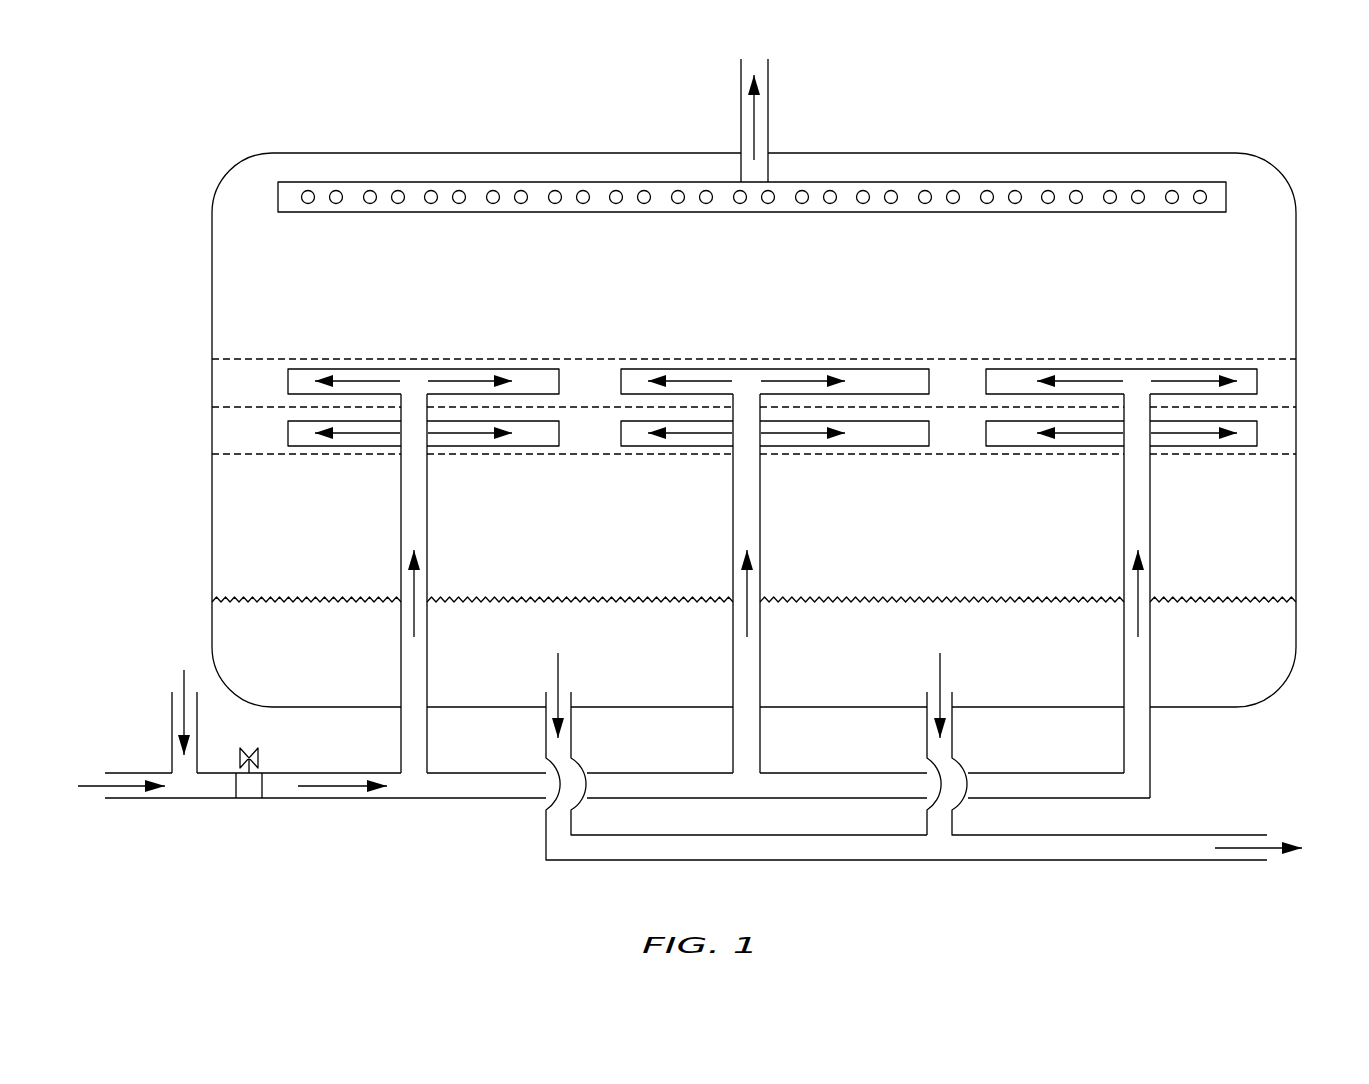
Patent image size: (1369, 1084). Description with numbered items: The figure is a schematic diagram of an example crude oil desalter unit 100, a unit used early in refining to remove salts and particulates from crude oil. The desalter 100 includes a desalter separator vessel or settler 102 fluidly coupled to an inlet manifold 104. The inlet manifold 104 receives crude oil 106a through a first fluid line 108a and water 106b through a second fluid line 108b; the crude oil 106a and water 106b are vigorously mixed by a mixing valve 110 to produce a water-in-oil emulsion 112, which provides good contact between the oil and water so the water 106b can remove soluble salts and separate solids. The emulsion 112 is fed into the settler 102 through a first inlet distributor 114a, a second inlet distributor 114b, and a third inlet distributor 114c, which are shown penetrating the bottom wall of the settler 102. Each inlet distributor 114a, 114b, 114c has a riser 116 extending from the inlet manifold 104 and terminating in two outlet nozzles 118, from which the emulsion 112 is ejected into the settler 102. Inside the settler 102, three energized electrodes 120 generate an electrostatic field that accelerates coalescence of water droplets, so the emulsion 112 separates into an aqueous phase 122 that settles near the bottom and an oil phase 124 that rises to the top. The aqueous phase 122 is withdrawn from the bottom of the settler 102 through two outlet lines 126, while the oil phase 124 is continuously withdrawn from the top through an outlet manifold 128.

The crude oil desalter unit 100 is at (238, 80).
The desalter separator vessel 102 is at (212, 243).
The inlet manifold 104 is at (460, 800).
The crude oil 106a is at (92, 783).
The water 106b is at (183, 672).
The first fluid line 108a is at (128, 800).
The second fluid line 108b is at (172, 722).
The mixing valve 110 is at (257, 757).
The water-in-oil emulsion 112 is at (415, 582).
The first inlet distributor 114a is at (382, 468).
The second inlet distributor 114b is at (718, 468).
The third inlet distributor 114c is at (1111, 468).
The riser 116 is at (401, 670).
The outlet nozzles 118 is at (276, 428).
The energized electrodes 120 is at (1283, 454).
The aqueous phase 122 is at (511, 665).
The oil phase 124 is at (494, 285).
The outlet lines 126 is at (575, 742).
The outlet manifold 128 is at (985, 182).